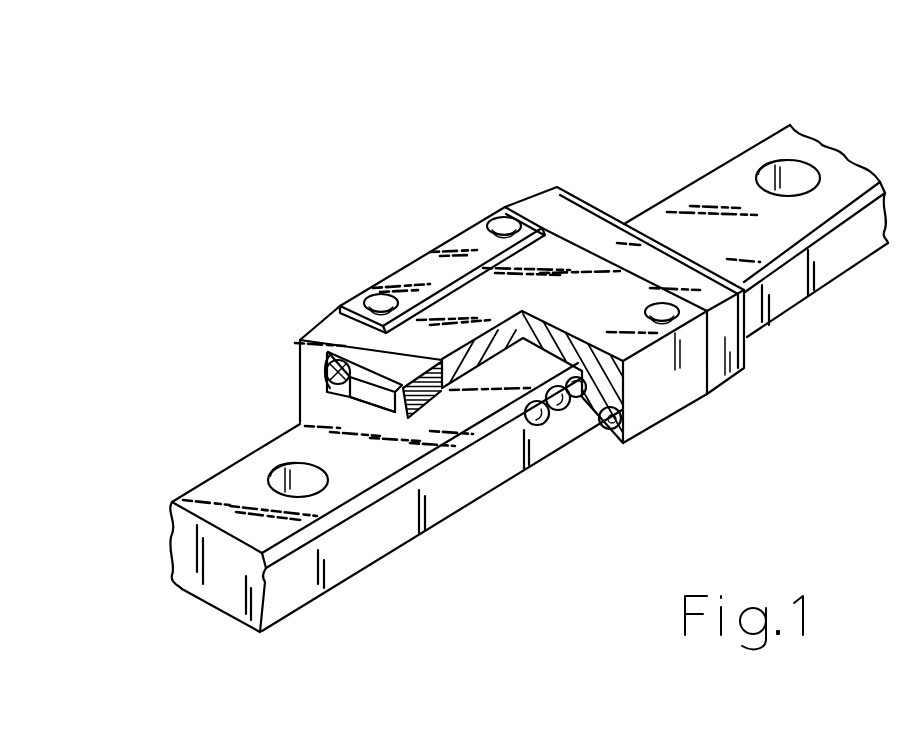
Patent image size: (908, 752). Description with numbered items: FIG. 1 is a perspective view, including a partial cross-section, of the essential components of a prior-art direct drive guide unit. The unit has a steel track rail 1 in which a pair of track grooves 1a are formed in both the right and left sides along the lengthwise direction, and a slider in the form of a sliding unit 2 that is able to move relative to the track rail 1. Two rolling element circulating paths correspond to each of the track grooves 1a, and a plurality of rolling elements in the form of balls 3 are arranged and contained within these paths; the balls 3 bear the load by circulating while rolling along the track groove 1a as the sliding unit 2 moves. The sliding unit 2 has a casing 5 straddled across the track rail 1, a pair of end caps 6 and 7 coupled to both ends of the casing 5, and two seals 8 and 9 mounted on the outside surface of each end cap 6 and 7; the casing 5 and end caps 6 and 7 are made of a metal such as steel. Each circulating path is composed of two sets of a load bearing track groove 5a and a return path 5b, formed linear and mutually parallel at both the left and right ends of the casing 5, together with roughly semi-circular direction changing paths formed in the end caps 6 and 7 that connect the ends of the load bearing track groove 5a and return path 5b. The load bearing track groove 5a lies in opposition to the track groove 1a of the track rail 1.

The track rail 1 is at (172, 493).
The track grooves 1a is at (172, 521).
The sliding unit 2 is at (450, 220).
The balls 3 is at (578, 405).
The casing 5 is at (428, 278).
The load bearing track groove 5a is at (584, 394).
The return path 5b is at (617, 418).
The end cap 6 is at (340, 331).
The end cap 7 is at (583, 225).
The seal 8 is at (322, 370).
The seal 9 is at (620, 214).